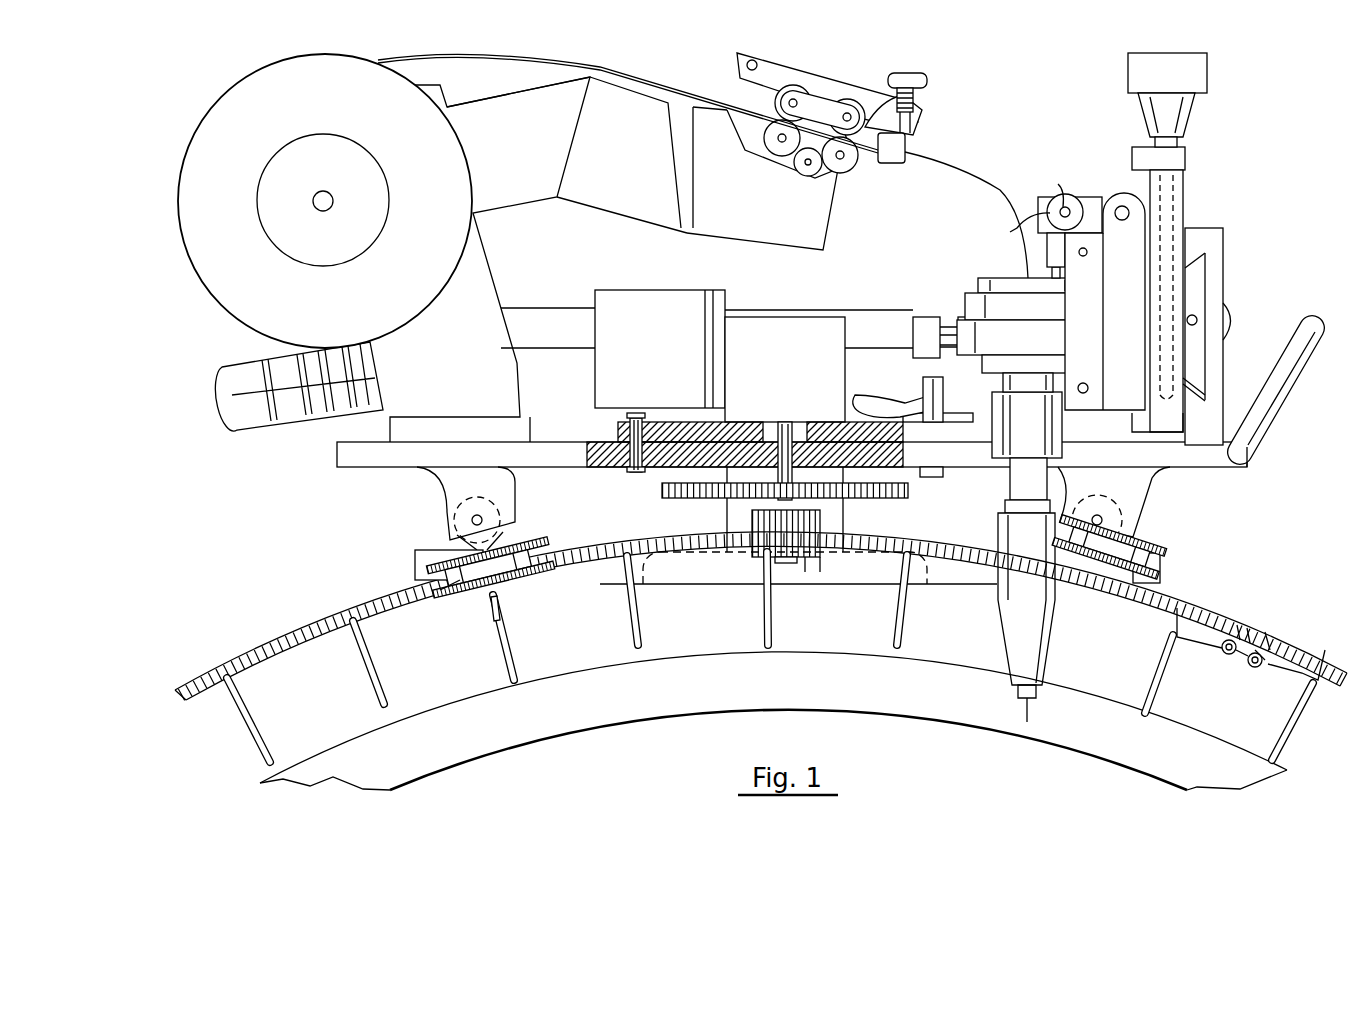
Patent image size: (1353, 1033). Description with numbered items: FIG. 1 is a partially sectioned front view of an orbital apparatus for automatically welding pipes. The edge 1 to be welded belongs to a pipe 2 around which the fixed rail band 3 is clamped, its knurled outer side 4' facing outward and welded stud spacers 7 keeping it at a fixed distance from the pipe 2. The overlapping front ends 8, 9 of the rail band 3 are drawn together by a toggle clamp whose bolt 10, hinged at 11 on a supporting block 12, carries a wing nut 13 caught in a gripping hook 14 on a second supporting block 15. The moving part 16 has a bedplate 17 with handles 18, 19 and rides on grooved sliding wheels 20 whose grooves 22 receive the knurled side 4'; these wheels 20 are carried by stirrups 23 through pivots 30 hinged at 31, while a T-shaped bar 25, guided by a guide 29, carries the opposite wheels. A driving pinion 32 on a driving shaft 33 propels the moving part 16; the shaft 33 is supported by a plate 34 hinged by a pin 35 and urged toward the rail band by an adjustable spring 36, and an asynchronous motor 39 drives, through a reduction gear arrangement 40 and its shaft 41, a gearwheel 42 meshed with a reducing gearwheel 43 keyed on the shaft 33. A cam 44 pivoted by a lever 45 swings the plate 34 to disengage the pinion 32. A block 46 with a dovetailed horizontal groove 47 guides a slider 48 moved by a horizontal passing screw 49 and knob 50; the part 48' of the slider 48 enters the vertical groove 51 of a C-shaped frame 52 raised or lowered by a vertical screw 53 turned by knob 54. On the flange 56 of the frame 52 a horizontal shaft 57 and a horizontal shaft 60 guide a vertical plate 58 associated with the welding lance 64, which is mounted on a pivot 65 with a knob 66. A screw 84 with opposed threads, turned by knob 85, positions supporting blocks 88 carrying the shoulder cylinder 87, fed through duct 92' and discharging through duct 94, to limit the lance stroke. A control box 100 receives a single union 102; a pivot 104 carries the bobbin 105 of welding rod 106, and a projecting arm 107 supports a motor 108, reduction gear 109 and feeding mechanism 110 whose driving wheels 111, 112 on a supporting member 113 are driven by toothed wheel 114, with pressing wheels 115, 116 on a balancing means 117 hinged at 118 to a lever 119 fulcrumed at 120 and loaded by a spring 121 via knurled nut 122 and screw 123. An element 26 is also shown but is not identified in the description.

The edge to be welded 1 is at (551, 722).
The pipe 2 is at (372, 727).
The rail band 3 is at (305, 628).
The knurled outer side 4' is at (762, 617).
The spacers 7 is at (252, 728).
The front end 8 is at (1245, 628).
The front end 9 is at (1272, 650).
The bolt 10 is at (1242, 660).
The hinge 11 is at (1226, 655).
The supporting block 12 is at (1200, 630).
The wing nut 13 is at (1257, 668).
The gripping hook 14 is at (1268, 635).
The supporting block 15 is at (1318, 678).
The moving part 16 is at (323, 457).
The bedplate 17 is at (378, 452).
The handle 18 is at (1278, 382).
The handle 19 is at (550, 308).
The grooved sliding wheels 20 is at (545, 545).
The grooves 22 is at (458, 583).
The stirrups 23 is at (440, 488).
The T-shaped bar 25 is at (600, 580).
The slide plate 26 is at (708, 572).
The guide 29 is at (727, 512).
The pivot 30 is at (500, 548).
The hinge 31 is at (470, 520).
The driving pinion 32 is at (820, 565).
The driving shaft 33 is at (800, 563).
The plate 34 is at (810, 422).
The pin 35 is at (630, 462).
The adjustable spring 36 is at (945, 412).
The asynchronous electric motor 39 is at (660, 300).
The reduction gear arrangement 40 is at (780, 340).
The shaft 41 is at (785, 421).
The gearwheel 42 is at (812, 502).
The reducing gearwheel 43 is at (905, 492).
The cam 44 is at (988, 445).
The lever 45 is at (905, 400).
The block 46 is at (1210, 235).
The dovetailed horizontal groove 47 is at (1207, 280).
The slider 48 is at (1236, 249).
The slider part 48' is at (1232, 368).
The horizontal passing screw 49 is at (1197, 318).
The knob 50 is at (1232, 318).
The dovetailed vertical groove 51 is at (1180, 424).
The C-shaped frame 52 is at (1165, 182).
The vertical passing screw 53 is at (1175, 198).
The knob 54 is at (1175, 105).
The flange 56 is at (1107, 311).
The horizontal shaft 57 is at (1088, 252).
The vertical plate 58 is at (1050, 274).
The horizontal shaft 60 is at (1084, 394).
The welding lance 64 is at (1020, 598).
The pivot 65 is at (960, 330).
The knob 66 is at (925, 316).
The screw 84 is at (1121, 205).
The knob 85 is at (1108, 200).
The small shoulder cylinder 87 is at (1058, 205).
The supporting blocks 88 is at (1050, 250).
The duct 92' is at (1006, 221).
The duct 94 is at (1060, 185).
The control box 100 is at (487, 266).
The single union 102 is at (238, 372).
The pivot 104 is at (318, 192).
The bobbin 105 is at (200, 252).
The welding rod 106 is at (590, 60).
The projecting arm 107 is at (515, 99).
The asynchronous electric motor 108 is at (620, 192).
The reduction gear arrangement 109 is at (757, 215).
The feeding mechanism 110 is at (725, 57).
The grooved driving wheel 111 is at (778, 150).
The grooved driving wheel 112 is at (848, 165).
The supporting member 113 is at (745, 130).
The toothed wheel 114 is at (808, 172).
The pressing wheel 115 is at (786, 88).
The pressing wheel 116 is at (880, 100).
The balancing means 117 is at (818, 98).
The hinge 118 is at (845, 100).
The lever 119 is at (770, 65).
The fulcrum 120 is at (750, 60).
The spring 121 is at (915, 100).
The knurled nut 122 is at (928, 80).
The screw 123 is at (905, 148).